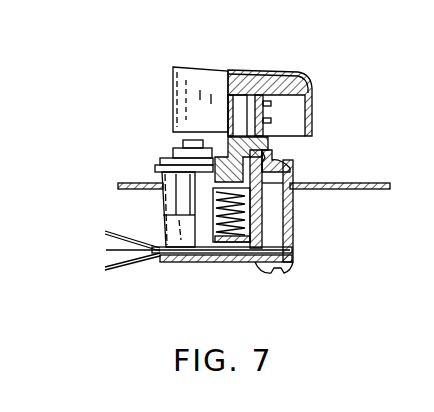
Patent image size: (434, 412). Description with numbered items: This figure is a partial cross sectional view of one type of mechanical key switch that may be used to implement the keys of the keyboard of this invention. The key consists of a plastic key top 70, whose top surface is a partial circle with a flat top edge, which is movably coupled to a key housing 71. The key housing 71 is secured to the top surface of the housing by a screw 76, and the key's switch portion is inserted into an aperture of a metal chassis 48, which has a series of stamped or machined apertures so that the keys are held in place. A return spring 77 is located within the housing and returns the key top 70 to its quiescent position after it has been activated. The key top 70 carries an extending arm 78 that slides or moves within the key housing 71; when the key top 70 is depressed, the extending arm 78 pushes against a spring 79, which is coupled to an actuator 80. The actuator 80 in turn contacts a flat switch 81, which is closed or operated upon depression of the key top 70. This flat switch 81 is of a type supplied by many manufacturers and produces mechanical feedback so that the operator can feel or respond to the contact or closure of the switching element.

The key top 70 is at (312, 90).
The return spring 77 is at (283, 136).
The extending arm 78 is at (268, 152).
The spring 79 is at (237, 212).
The actuator 80 is at (212, 234).
The key housing 71 is at (165, 184).
The metal chassis 48 is at (386, 190).
The screw 76 is at (285, 263).
The flat switch 81 is at (148, 256).